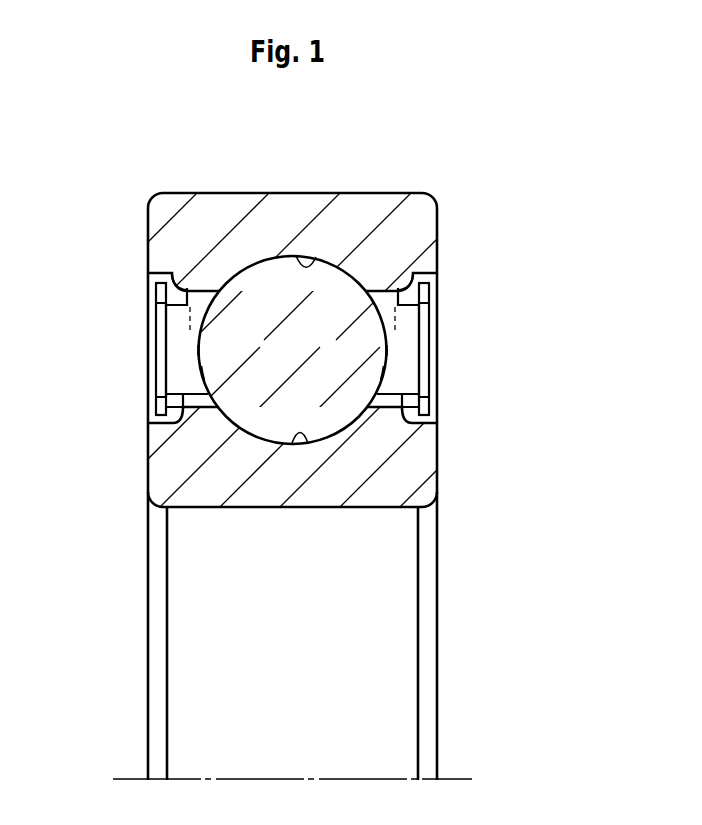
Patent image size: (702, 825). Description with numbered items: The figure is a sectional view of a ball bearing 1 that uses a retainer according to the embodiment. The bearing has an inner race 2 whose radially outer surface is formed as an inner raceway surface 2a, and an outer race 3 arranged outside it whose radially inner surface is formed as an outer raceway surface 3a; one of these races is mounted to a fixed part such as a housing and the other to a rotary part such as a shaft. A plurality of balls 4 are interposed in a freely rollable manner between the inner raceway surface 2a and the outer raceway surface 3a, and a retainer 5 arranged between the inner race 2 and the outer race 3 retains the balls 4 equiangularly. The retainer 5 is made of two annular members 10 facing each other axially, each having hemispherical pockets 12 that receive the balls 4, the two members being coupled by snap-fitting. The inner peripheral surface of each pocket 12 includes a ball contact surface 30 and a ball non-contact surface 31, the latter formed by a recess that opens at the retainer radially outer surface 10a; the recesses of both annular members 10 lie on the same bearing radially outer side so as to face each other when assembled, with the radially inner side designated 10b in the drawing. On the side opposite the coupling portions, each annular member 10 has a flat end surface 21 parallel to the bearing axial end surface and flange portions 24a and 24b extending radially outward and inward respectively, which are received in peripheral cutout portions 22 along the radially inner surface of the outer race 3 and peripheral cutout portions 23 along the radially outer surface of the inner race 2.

The ball bearing 1 is at (465, 181).
The inner race 2 is at (372, 508).
The inner raceway surface 2a is at (292, 442).
The outer race 3 is at (362, 194).
The outer raceway surface 3a is at (306, 262).
The balls 4 is at (267, 286).
The retainer 5 is at (149, 378).
The annular member 10 is at (149, 334).
The retainer radially outer surface 10a is at (184, 292).
The inner peripheral portion of seal 10b is at (190, 410).
The pocket 12 is at (203, 373).
The end surface 21 is at (157, 356).
The peripheral cutout portion 22 is at (166, 305).
The peripheral cutout portion 23 is at (165, 410).
The flange portion 24a is at (160, 286).
The flange portion 24b is at (160, 418).
The ball contact surface 30 is at (386, 352).
The ball non-contact surface 31 is at (395, 322).